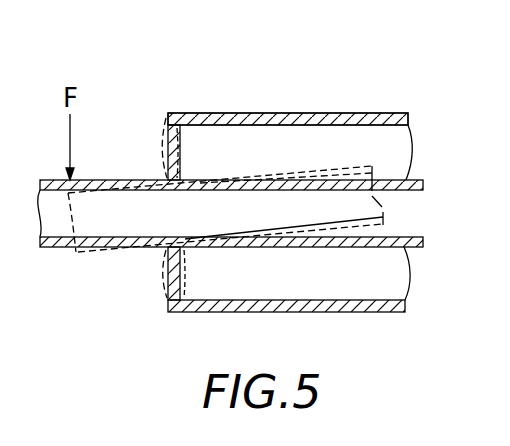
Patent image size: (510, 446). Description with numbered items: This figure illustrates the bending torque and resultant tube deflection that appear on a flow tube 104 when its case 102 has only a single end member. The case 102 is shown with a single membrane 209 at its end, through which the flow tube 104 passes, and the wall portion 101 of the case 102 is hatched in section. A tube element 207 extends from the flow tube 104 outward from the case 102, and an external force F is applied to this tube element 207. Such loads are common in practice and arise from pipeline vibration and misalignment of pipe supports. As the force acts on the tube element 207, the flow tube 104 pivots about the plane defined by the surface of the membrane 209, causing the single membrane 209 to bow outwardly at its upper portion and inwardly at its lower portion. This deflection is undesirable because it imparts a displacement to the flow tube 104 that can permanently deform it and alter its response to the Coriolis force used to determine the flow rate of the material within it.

The tube wall 101 is at (283, 113).
The case 102 is at (386, 110).
The flow tube 104 is at (260, 222).
The tube element 207 is at (57, 223).
The membrane 209 is at (195, 152).